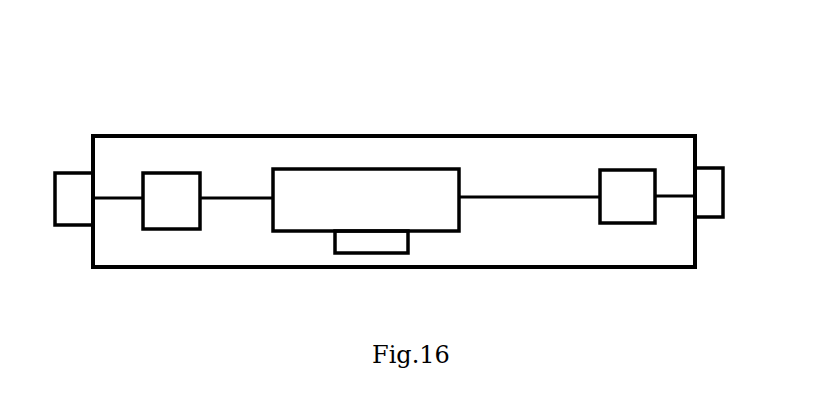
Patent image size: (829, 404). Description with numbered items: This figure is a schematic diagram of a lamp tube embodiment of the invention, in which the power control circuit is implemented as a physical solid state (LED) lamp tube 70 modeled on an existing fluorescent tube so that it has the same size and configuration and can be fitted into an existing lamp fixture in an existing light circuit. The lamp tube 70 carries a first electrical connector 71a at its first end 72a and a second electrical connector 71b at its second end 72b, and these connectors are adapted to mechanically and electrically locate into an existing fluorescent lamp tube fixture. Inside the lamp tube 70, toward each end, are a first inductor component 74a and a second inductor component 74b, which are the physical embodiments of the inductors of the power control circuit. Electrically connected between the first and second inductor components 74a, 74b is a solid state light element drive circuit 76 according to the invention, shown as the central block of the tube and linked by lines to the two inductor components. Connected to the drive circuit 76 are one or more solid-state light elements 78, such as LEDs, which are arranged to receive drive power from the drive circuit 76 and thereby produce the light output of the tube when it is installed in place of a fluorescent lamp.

The lamp tube 70 is at (450, 137).
The first electrical connector 71a is at (68, 225).
The second electrical connector 71b is at (712, 217).
The first end 72a is at (82, 150).
The second end 72b is at (718, 153).
The first inductor component 74a is at (163, 173).
The second inductor component 74b is at (635, 170).
The solid state light element drive circuit 76 is at (378, 218).
The solid-state light elements 78 is at (377, 253).